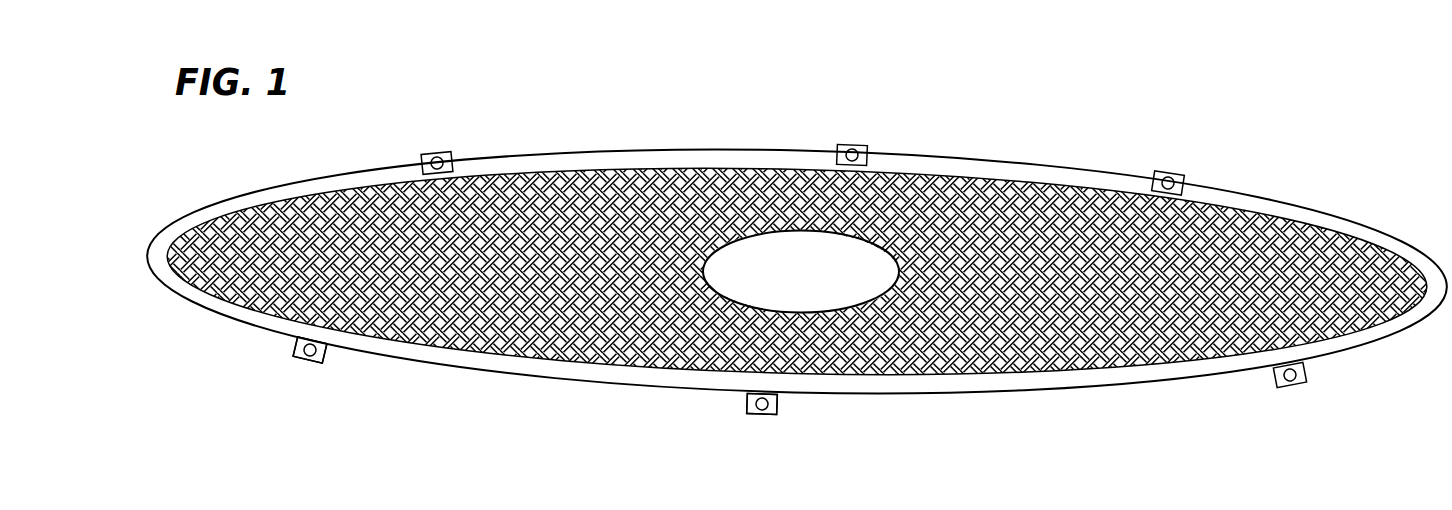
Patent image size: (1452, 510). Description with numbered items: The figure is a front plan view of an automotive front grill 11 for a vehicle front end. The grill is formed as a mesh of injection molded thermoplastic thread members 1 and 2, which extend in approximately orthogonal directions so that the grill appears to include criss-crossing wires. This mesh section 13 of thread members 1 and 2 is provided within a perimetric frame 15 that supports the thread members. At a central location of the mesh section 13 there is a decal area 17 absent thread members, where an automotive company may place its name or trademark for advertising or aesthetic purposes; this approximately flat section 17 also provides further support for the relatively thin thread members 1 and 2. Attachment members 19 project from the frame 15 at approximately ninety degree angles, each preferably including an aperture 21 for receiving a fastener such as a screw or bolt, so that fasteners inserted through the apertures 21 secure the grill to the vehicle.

The thread member 1 is at (1181, 318).
The thread member 2 is at (1022, 305).
The automotive front grill 11 is at (1170, 121).
The mesh section 13 is at (492, 268).
The perimetric frame 15 is at (483, 362).
The decal area 17 is at (768, 283).
The attachment member 19 is at (863, 150).
The aperture 21 is at (299, 362).